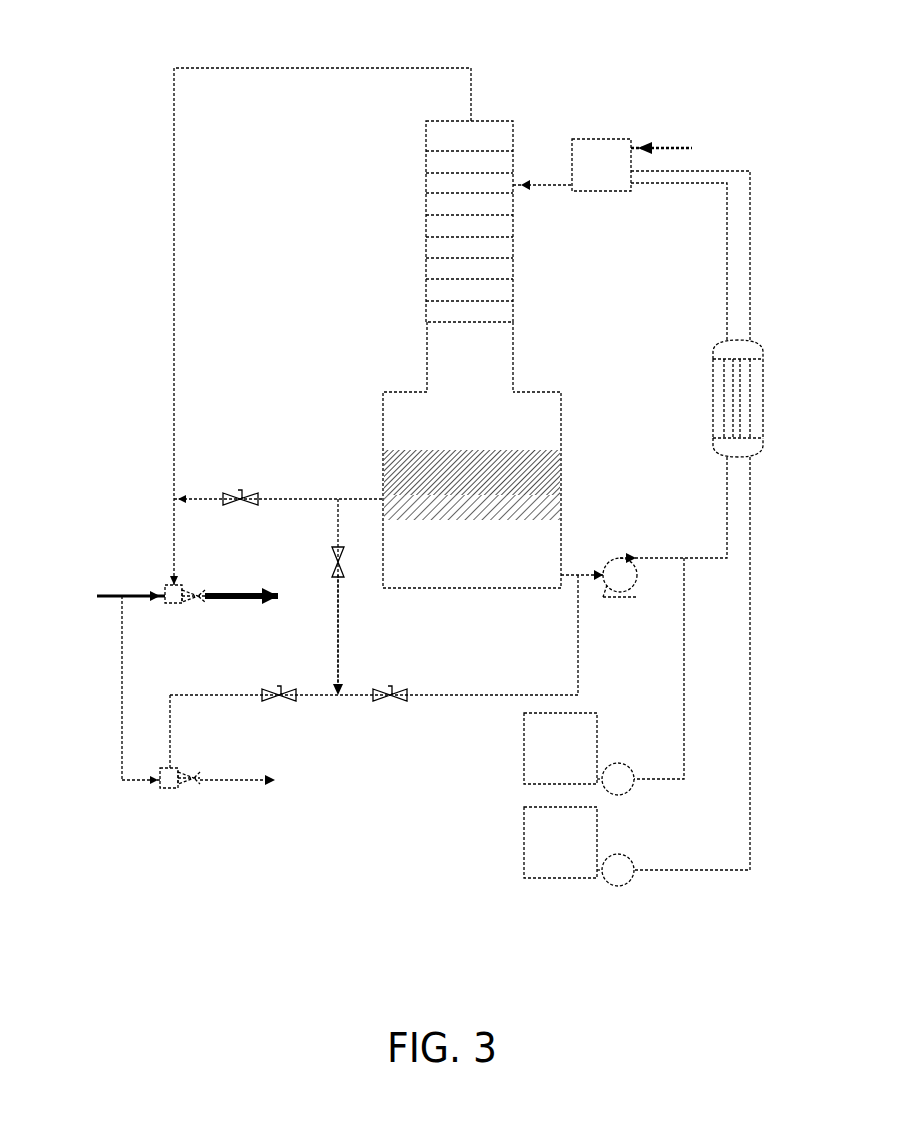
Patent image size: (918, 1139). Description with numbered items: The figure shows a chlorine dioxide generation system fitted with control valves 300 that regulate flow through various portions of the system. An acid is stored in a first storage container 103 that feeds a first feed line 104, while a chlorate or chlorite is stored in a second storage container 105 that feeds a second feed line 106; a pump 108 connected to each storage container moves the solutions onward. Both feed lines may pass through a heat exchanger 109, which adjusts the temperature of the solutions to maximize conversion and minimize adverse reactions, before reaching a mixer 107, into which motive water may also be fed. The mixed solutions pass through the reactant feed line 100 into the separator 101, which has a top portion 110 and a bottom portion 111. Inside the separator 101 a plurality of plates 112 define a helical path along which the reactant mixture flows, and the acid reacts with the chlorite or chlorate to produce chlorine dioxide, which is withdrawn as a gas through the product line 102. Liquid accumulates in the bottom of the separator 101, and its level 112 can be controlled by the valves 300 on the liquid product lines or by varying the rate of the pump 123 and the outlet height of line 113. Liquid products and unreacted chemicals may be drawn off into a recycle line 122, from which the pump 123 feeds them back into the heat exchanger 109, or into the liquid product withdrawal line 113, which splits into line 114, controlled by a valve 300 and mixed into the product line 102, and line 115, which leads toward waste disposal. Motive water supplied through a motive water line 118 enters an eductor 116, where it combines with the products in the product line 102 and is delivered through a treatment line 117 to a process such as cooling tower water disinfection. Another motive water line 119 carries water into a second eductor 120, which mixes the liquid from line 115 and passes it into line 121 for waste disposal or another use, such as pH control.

The reactant feed line 100 is at (527, 182).
The separator 101 is at (420, 228).
The product line 102 is at (471, 82).
The first storage container 103 is at (563, 748).
The first feed line 104 is at (727, 198).
The second storage container 105 is at (563, 842).
The second feed line 106 is at (750, 180).
The mixer 107 is at (596, 180).
The pump 108 is at (624, 856).
The heat exchanger 109 is at (745, 350).
The top portion 110 is at (440, 140).
The bottom portion 111 is at (383, 403).
The plates / liquid level 112 is at (426, 320).
The liquid product withdrawal line 113 is at (345, 498).
The line 114 is at (283, 498).
The line 115 is at (343, 610).
The eductor 116 is at (180, 605).
The treatment line 117 is at (230, 598).
The motive water line 118 is at (97, 598).
The motive water line 119 is at (122, 770).
The eductor 120 is at (172, 790).
The line 121 is at (235, 780).
The recycle line 122 is at (582, 575).
The pump 123 is at (616, 560).
The valve 300 is at (238, 492).